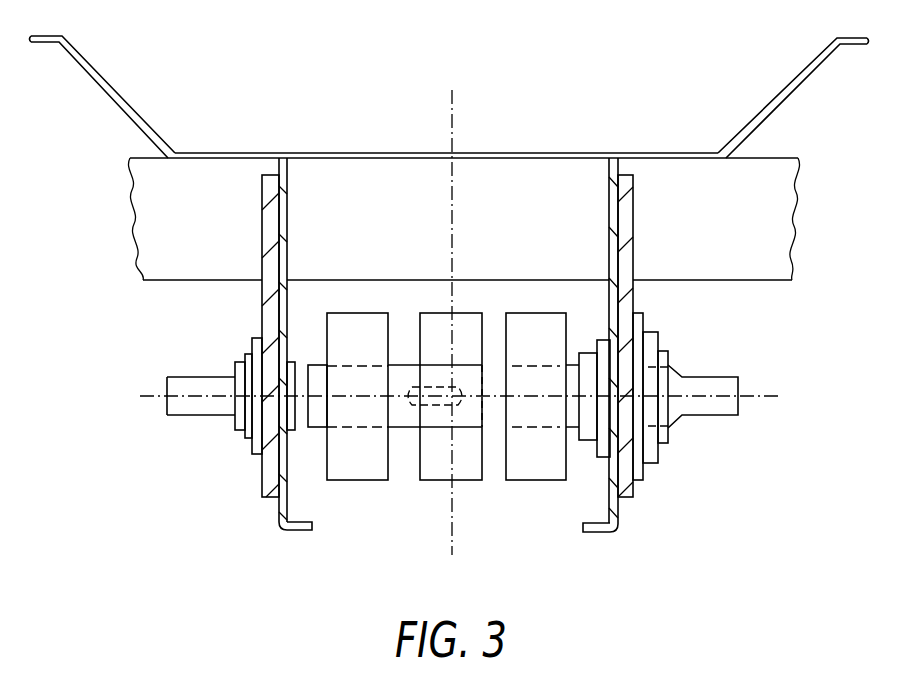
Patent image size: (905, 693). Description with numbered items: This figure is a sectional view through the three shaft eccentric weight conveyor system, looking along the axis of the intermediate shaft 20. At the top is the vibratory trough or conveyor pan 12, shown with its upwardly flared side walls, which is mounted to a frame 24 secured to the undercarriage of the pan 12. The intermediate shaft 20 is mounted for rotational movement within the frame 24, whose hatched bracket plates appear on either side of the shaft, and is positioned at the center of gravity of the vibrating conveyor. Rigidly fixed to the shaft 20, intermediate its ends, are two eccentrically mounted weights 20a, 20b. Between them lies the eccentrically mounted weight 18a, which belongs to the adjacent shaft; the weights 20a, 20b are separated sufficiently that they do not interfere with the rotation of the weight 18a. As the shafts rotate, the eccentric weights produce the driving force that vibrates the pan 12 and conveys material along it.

The conveyor pan 12 is at (548, 153).
The eccentrically mounted weight 18a is at (438, 313).
The intermediate shaft 20 is at (717, 413).
The eccentrically mounted weight 20a is at (538, 313).
The eccentrically mounted weight 20b is at (359, 313).
The frame 24 is at (615, 511).